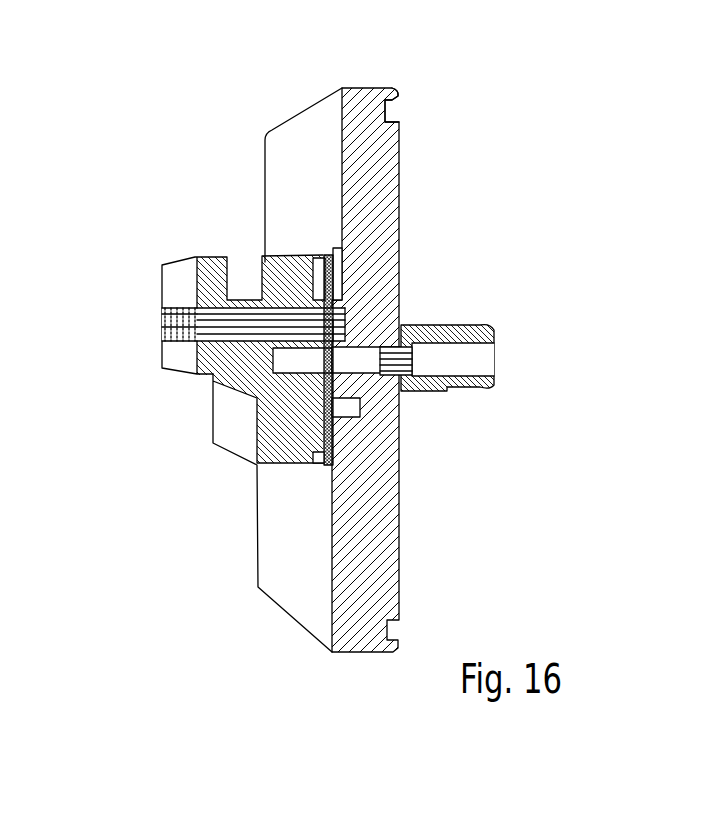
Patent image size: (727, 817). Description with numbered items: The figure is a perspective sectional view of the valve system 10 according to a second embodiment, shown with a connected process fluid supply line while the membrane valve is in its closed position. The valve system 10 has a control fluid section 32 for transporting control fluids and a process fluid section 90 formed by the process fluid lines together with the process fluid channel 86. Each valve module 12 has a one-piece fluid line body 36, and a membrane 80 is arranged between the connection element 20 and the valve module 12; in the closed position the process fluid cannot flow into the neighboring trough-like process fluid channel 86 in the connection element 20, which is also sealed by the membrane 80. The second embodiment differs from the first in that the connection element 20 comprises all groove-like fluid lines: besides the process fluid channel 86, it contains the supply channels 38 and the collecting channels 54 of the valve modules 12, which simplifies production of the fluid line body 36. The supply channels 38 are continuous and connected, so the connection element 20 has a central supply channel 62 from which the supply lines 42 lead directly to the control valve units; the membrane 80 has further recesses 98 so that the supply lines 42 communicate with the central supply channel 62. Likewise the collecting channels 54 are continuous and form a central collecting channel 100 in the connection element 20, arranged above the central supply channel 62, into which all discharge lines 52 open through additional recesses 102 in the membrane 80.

The valve system 10 is at (133, 170).
The valve module 12 is at (193, 252).
The connection element 20 is at (366, 115).
The control fluid section 32 is at (404, 137).
The fluid line body 36 is at (265, 397).
The supply channel 38 is at (355, 335).
The supply line 42 is at (205, 329).
The discharge line 52 is at (205, 313).
The collecting channel 54 is at (340, 292).
The central supply channel 62 is at (343, 327).
The membrane 80 is at (333, 462).
The process fluid channel 86 is at (349, 409).
The process fluid section 90 is at (322, 218).
The further recess 98 is at (309, 342).
The central collecting channel 100 is at (344, 313).
The additional recess 102 is at (313, 300).